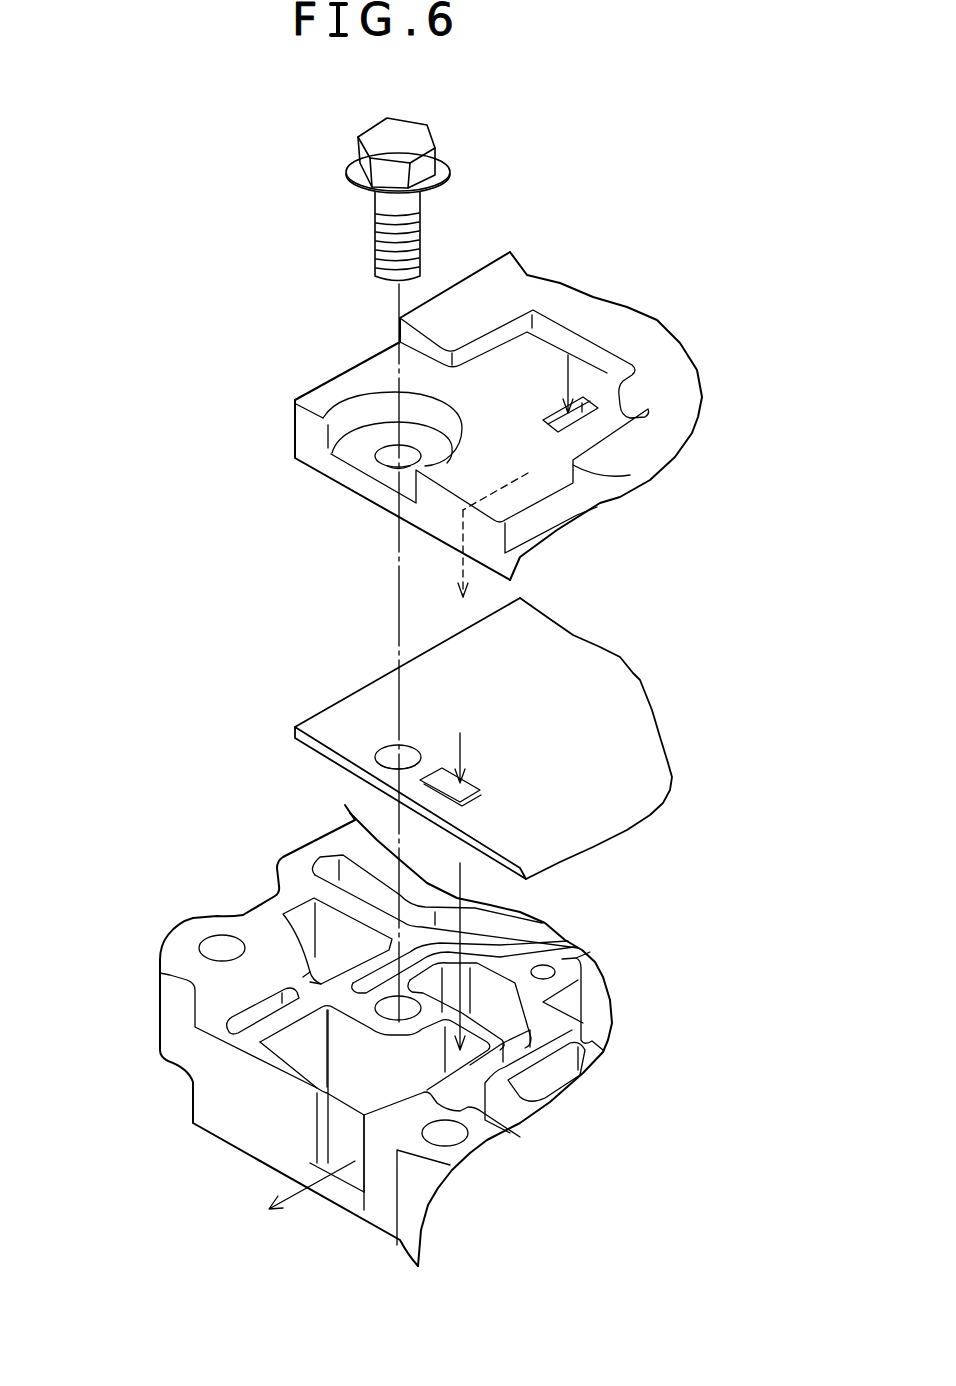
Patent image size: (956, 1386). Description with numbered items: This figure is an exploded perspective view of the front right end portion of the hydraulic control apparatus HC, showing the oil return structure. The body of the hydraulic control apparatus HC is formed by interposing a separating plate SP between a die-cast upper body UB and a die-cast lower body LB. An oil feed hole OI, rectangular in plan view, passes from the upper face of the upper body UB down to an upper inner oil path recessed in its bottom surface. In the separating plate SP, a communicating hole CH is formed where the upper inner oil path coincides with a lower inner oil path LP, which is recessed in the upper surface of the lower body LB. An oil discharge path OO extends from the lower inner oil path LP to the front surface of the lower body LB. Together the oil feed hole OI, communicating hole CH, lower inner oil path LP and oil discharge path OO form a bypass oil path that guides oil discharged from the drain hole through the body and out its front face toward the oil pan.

The hydraulic control apparatus HC is at (193, 385).
The upper body UB is at (528, 278).
The separating plate SP is at (625, 687).
The lower body LB is at (170, 1020).
The oil feed hole OI is at (557, 412).
The communicating hole CH is at (472, 787).
The lower inner oil path LP is at (350, 1060).
The oil discharge path OO is at (321, 1134).